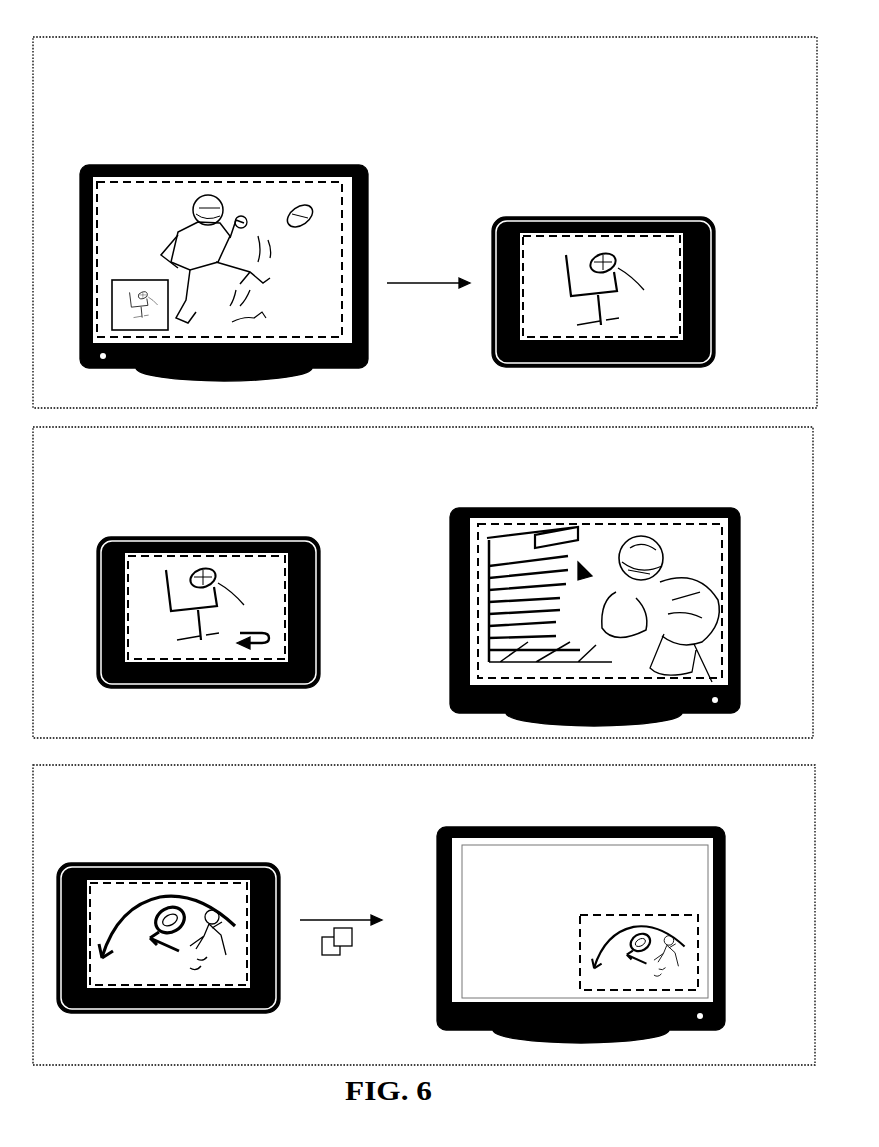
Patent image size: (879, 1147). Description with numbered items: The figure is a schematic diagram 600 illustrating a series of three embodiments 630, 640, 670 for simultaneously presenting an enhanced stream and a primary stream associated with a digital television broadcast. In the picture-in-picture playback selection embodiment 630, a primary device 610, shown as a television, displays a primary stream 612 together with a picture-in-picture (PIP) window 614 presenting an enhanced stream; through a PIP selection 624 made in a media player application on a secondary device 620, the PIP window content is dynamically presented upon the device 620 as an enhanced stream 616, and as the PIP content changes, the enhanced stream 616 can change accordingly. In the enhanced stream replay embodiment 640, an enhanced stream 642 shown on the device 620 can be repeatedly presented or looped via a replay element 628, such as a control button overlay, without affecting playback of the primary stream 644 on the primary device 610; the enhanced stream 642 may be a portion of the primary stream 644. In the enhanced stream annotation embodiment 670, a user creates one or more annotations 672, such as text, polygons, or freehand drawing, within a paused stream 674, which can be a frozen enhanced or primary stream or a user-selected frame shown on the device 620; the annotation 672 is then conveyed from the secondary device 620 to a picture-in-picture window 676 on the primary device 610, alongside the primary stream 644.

The user interface flow diagram 600 is at (818, 28).
The embodiment 630 is at (415, 62).
The primary stream 612 is at (257, 186).
The picture-in-picture (PIP) window 614 is at (130, 281).
The primary device 610 is at (334, 166).
The enhanced stream 616 is at (626, 238).
The device 620 is at (734, 244).
The PIP selection 624 is at (428, 245).
The embodiment 640 is at (308, 452).
The enhanced stream 642 is at (197, 557).
The replay element 628 is at (251, 631).
The primary stream 644 is at (652, 845).
The embodiment 670 is at (343, 792).
The annotation 672 is at (178, 900).
The paused stream 674 is at (246, 905).
The picture-in-picture window 676 is at (700, 963).